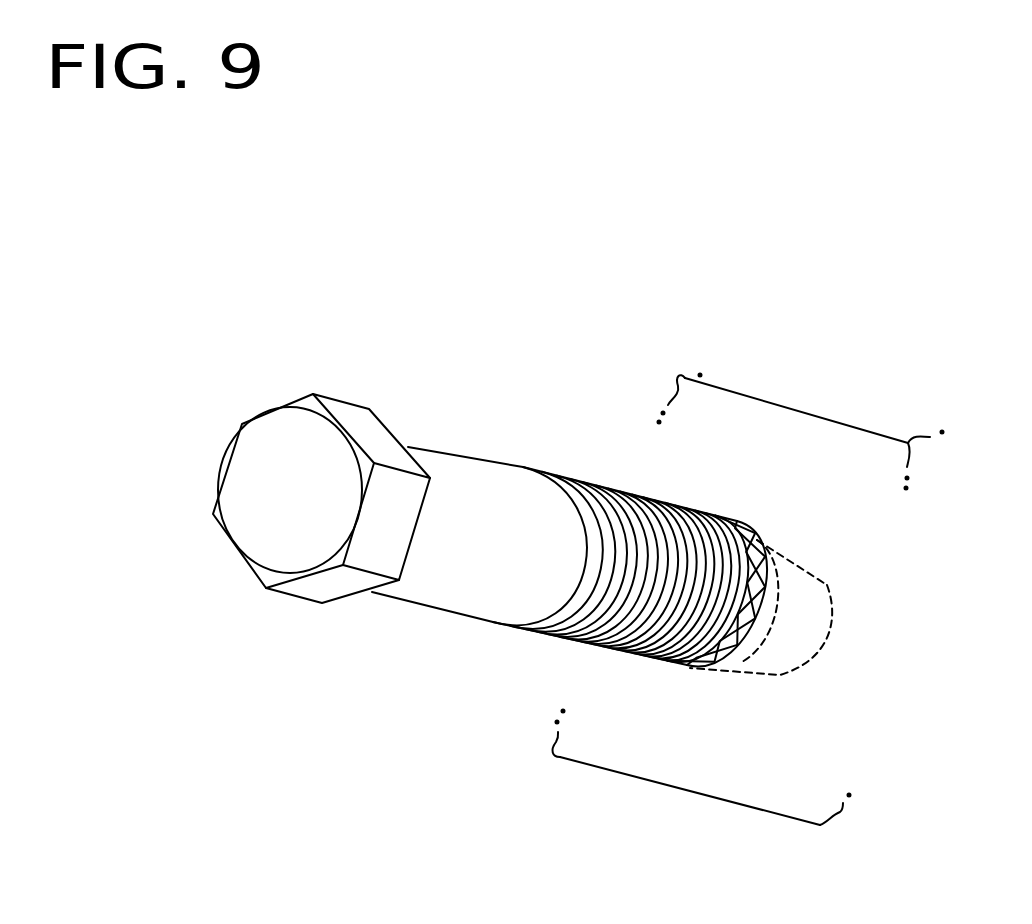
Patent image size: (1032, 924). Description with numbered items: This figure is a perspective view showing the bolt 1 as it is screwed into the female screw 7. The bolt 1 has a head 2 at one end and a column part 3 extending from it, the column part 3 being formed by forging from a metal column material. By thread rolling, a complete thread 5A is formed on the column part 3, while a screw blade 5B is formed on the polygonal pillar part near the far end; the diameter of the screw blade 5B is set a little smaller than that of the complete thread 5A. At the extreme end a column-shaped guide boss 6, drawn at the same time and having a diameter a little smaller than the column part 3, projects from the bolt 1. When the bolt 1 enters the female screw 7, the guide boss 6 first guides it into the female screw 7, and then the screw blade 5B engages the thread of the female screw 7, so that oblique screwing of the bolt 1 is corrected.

The bolt 1 is at (483, 452).
The head 2 is at (280, 550).
The column part 3 is at (477, 597).
The complete thread 5A is at (616, 483).
The screw blade 5B is at (743, 535).
The guide boss 6 is at (830, 587).
The female screw 7 is at (748, 627).